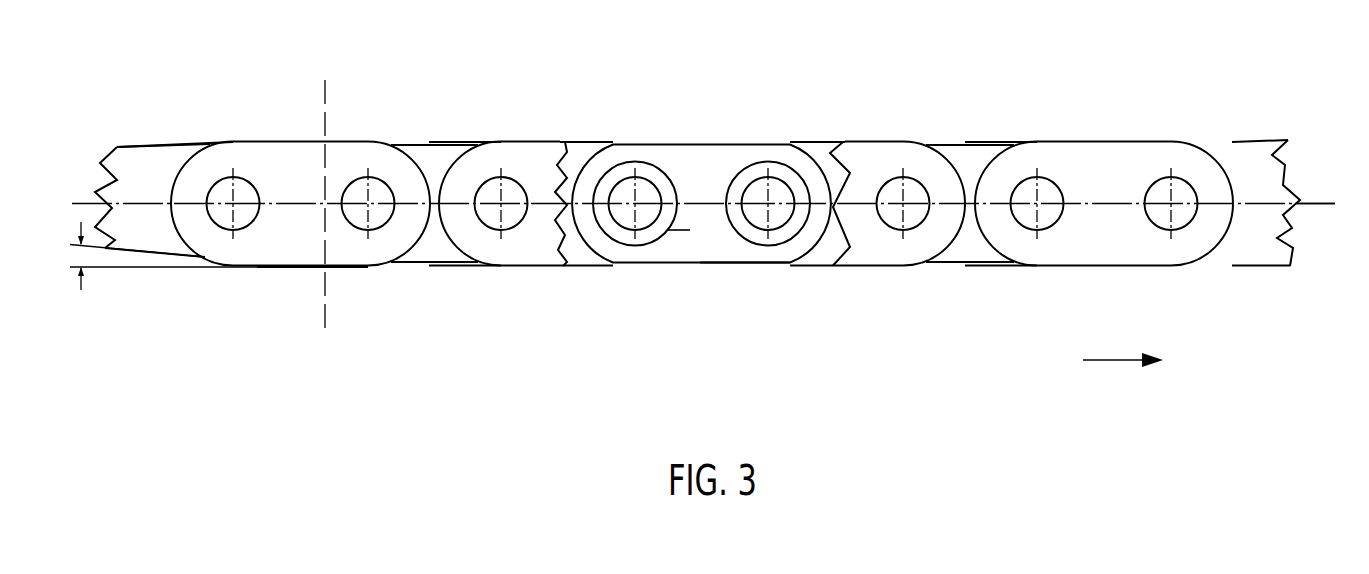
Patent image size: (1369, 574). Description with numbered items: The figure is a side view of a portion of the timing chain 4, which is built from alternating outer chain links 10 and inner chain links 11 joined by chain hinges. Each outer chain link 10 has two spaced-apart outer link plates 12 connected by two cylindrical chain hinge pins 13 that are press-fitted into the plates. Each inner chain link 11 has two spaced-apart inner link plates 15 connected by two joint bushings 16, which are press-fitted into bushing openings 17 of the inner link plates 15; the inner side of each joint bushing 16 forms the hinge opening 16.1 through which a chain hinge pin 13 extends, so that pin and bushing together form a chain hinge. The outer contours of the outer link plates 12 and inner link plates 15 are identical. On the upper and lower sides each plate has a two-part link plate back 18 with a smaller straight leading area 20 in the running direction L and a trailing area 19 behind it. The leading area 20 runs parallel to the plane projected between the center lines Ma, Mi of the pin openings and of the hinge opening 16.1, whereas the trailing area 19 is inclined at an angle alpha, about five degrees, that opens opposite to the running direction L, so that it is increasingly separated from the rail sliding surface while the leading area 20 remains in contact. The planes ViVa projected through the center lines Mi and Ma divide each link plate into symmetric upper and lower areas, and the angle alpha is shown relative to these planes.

The timing chain 4 is at (1082, 72).
The outer chain link 10 is at (258, 95).
The inner chain link 11 is at (660, 105).
The outer link plate 12 is at (307, 163).
The chain hinge pin 13 is at (382, 218).
The inner link plate 15 is at (698, 162).
The joint bushing 16 is at (610, 227).
The hinge opening 16.1 is at (618, 222).
The bushing opening 17 is at (672, 229).
The link plate back 18 is at (276, 141).
The trailing area 19 is at (215, 262).
The leading area 20 is at (349, 276).
The center line of pin openings Ma is at (233, 203).
The center line of hinge opening Mi is at (635, 203).
The angle alpha is at (153, 256).
The running direction L is at (1117, 362).
The planes Vi and Va ViVa is at (1302, 197).